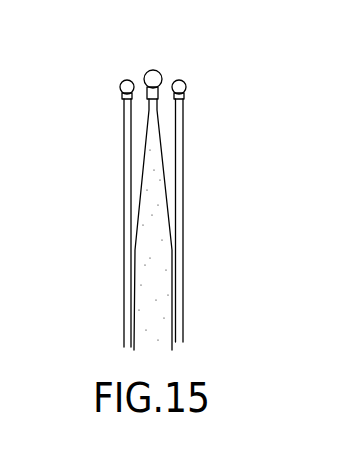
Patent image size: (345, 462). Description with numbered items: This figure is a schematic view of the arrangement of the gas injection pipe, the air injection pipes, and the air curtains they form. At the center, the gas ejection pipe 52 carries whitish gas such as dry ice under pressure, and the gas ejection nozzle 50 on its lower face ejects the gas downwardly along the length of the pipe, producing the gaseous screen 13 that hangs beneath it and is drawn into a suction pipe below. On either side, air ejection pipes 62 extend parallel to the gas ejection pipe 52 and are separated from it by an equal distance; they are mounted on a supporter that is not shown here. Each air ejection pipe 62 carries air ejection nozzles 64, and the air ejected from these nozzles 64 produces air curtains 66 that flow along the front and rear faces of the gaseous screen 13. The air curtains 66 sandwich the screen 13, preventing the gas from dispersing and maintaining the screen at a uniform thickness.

The gaseous screen 13 is at (153, 297).
The gas ejection nozzle 50 is at (148, 94).
The gas ejection pipe 52 is at (162, 71).
The air ejection pipe 62 is at (120, 84).
The air ejection nozzle 64 is at (122, 99).
The air curtain 66 is at (180, 222).